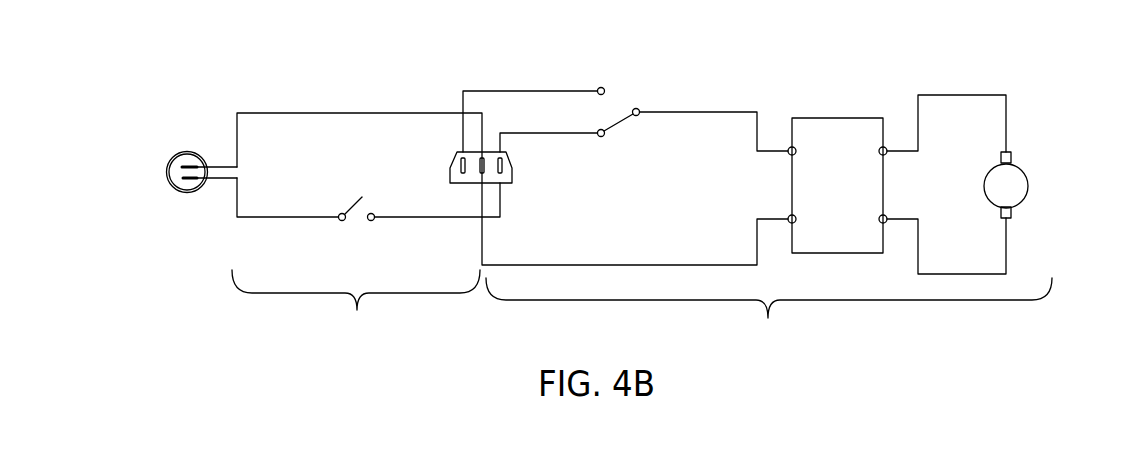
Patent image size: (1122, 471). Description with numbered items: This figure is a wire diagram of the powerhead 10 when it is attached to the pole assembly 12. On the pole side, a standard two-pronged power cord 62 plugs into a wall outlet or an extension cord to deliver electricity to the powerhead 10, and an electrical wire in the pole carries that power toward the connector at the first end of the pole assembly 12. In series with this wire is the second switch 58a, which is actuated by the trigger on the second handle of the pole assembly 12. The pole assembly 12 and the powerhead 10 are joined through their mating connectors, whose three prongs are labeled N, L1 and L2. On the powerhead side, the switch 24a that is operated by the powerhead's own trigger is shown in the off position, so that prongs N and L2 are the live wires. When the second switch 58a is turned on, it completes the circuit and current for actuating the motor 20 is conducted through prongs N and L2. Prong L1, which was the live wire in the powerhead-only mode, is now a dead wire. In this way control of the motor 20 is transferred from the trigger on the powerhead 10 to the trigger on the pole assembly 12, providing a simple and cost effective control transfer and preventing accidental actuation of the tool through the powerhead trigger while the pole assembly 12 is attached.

The power cord 62 is at (176, 203).
The second switch 58a is at (356, 220).
The prong N is at (481, 162).
The prong L1 is at (462, 167).
The prong L2 is at (504, 171).
The switch 24a is at (657, 93).
The motor 20 is at (1041, 177).
The pole assembly 12 is at (356, 304).
The powerhead 10 is at (769, 311).